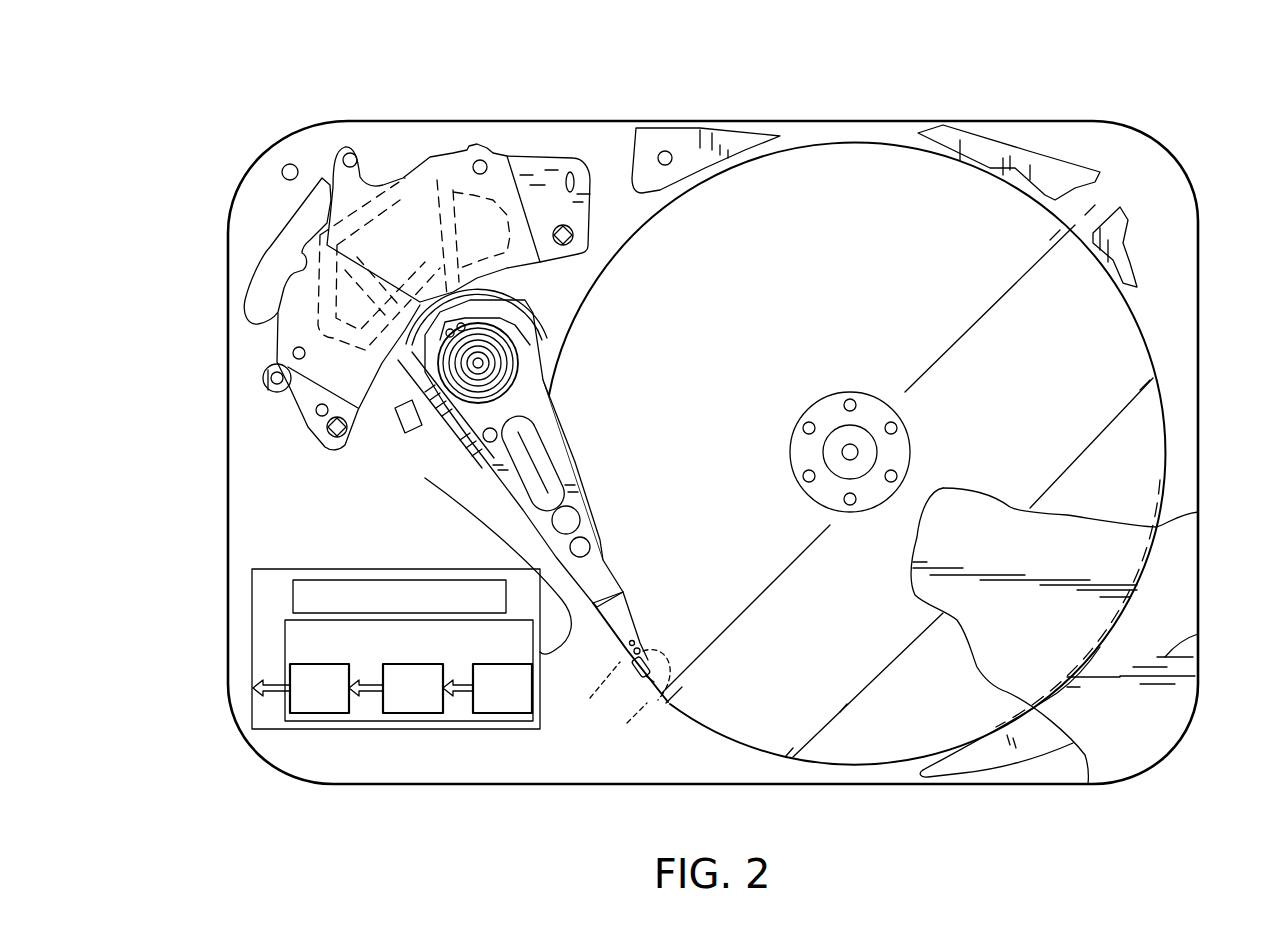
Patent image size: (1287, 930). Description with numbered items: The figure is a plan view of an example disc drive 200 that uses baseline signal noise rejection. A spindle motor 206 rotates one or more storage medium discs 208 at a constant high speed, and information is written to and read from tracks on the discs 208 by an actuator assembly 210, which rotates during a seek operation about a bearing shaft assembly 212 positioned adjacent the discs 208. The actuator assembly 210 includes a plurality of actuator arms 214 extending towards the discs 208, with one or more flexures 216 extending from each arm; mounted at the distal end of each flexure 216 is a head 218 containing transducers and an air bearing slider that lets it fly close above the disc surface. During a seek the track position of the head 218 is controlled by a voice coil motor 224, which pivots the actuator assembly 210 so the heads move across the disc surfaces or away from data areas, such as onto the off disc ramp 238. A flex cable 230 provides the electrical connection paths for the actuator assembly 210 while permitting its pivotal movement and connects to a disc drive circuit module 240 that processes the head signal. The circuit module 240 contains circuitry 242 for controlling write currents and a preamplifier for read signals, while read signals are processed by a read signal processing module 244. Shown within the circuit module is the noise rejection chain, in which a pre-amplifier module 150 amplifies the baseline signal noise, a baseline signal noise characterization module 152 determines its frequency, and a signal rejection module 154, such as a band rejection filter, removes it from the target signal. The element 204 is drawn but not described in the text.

The disc drive 200 is at (220, 110).
The air dam / shroud 204 is at (1165, 658).
The spindle motor 206 is at (852, 452).
The storage medium disc 208 is at (826, 197).
The actuator assembly 210 is at (575, 463).
The bearing shaft assembly 212 is at (480, 362).
The actuator arm 214 is at (590, 512).
The flexure 216 is at (634, 632).
The head 218 is at (665, 652).
The voice coil motor 224 is at (447, 156).
The flex cable 230 is at (437, 470).
The off disc ramp 238 is at (633, 722).
The disc drive circuit module 240 is at (342, 676).
The circuitry for controlling write currents 242 is at (293, 590).
The read signal processing module 244 is at (287, 648).
The pre-amplifier module 150 is at (502, 688).
The baseline signal noise characterization module 152 is at (413, 688).
The signal rejection module 154 is at (319, 688).